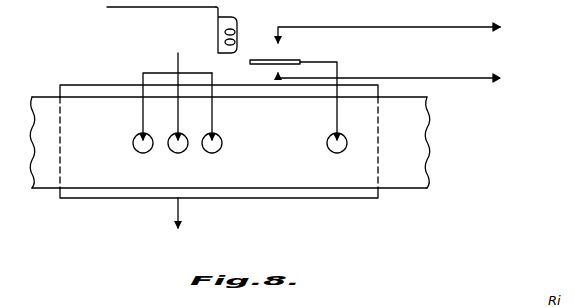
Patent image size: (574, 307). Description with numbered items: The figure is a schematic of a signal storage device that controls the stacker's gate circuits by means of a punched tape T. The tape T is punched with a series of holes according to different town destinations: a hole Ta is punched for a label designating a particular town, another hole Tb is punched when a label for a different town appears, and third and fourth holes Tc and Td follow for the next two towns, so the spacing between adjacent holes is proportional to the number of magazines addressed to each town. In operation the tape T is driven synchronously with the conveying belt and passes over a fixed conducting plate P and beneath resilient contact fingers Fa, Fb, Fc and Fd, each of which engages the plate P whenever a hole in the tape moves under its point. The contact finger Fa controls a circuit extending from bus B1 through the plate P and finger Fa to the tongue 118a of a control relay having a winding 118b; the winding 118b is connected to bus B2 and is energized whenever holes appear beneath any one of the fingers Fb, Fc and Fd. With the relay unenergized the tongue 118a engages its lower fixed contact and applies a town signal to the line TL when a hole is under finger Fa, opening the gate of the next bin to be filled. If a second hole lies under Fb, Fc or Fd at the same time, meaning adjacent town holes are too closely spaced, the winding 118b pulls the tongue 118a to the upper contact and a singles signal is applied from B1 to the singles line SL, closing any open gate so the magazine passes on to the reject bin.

The bus B2 is at (148, 7).
The relay winding 118b is at (236, 24).
The relay tongue 118a is at (298, 60).
The singles line SL is at (478, 27).
The town line TL is at (448, 80).
The tape T is at (437, 107).
The conducting plate P is at (252, 201).
The bus B1 is at (182, 211).
The contact finger Fa is at (340, 118).
The contact finger Fb is at (214, 113).
The contact finger Fc is at (179, 123).
The contact finger Fd is at (143, 113).
The tape hole Ta is at (338, 153).
The tape hole Tb is at (216, 153).
The tape hole Tc is at (178, 153).
The tape hole Td is at (142, 153).